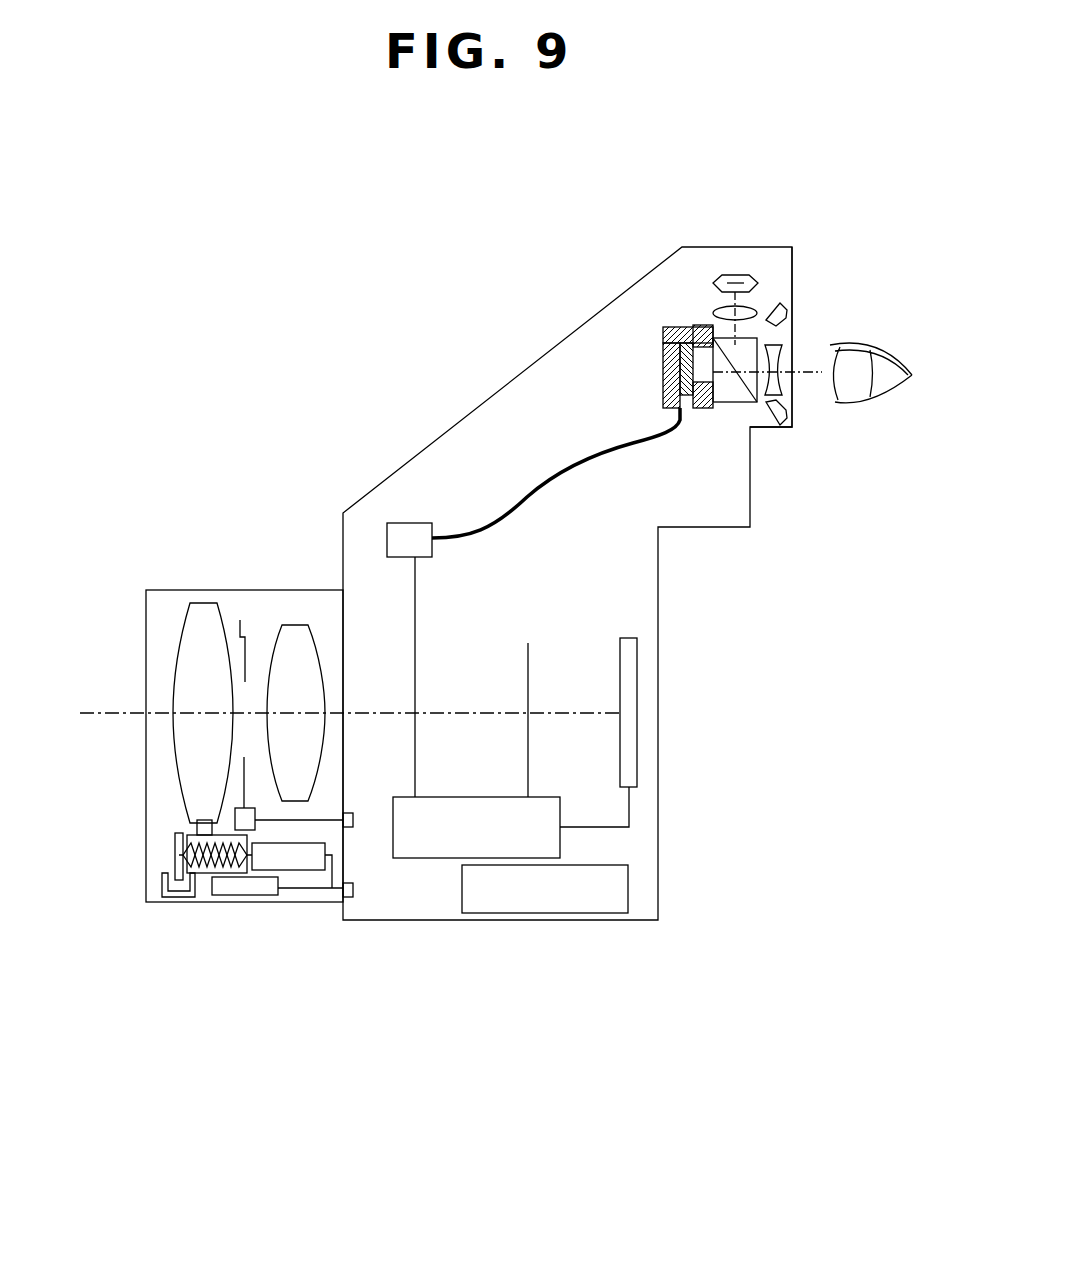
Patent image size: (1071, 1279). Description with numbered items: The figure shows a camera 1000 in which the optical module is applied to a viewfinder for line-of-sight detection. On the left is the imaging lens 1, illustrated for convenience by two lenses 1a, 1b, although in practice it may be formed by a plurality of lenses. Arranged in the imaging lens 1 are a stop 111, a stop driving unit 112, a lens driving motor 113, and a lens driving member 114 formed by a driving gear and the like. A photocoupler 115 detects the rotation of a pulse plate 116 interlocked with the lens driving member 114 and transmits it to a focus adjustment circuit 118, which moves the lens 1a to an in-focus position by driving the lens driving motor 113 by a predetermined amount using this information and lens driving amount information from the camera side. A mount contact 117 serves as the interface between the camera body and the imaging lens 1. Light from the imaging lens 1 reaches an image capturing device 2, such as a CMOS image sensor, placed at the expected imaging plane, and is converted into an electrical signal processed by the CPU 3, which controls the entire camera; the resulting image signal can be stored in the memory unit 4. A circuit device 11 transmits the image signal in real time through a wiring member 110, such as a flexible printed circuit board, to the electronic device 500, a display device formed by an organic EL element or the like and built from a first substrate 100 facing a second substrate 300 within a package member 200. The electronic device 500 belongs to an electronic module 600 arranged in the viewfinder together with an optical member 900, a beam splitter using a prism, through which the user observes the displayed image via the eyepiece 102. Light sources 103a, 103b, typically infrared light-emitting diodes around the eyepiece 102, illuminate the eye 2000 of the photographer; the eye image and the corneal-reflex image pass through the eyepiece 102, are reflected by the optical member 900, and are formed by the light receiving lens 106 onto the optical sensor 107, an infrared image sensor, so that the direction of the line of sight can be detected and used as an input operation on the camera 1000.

The imaging lens 1 is at (238, 590).
The lens 1a is at (202, 603).
The lens 1b is at (297, 625).
The image capturing device 2 is at (637, 692).
The CPU 3 is at (420, 858).
The memory unit 4 is at (628, 887).
The circuit device 11 is at (412, 523).
The first substrate 100 is at (668, 380).
The eyepiece 102 is at (782, 358).
The light source 103a is at (790, 316).
The light source 103b is at (782, 410).
The light receiving lens 106 is at (745, 313).
The optical sensor 107 is at (738, 275).
The wiring member 110 is at (562, 480).
The stop 111 is at (237, 660).
The stop driving unit 112 is at (237, 818).
The lens driving motor 113 is at (287, 858).
The lens driving member 114 is at (202, 873).
The photocoupler 115 is at (182, 897).
The pulse plate 116 is at (175, 858).
The mount contact 117 is at (353, 892).
The focus adjustment circuit 118 is at (245, 887).
The package member 200 is at (672, 335).
The second substrate 300 is at (690, 362).
The electronic device 500 is at (615, 304).
The electronic module 600 is at (637, 279).
The optical member 900 is at (728, 402).
The camera 1000 is at (480, 403).
The eye 2000 is at (882, 380).